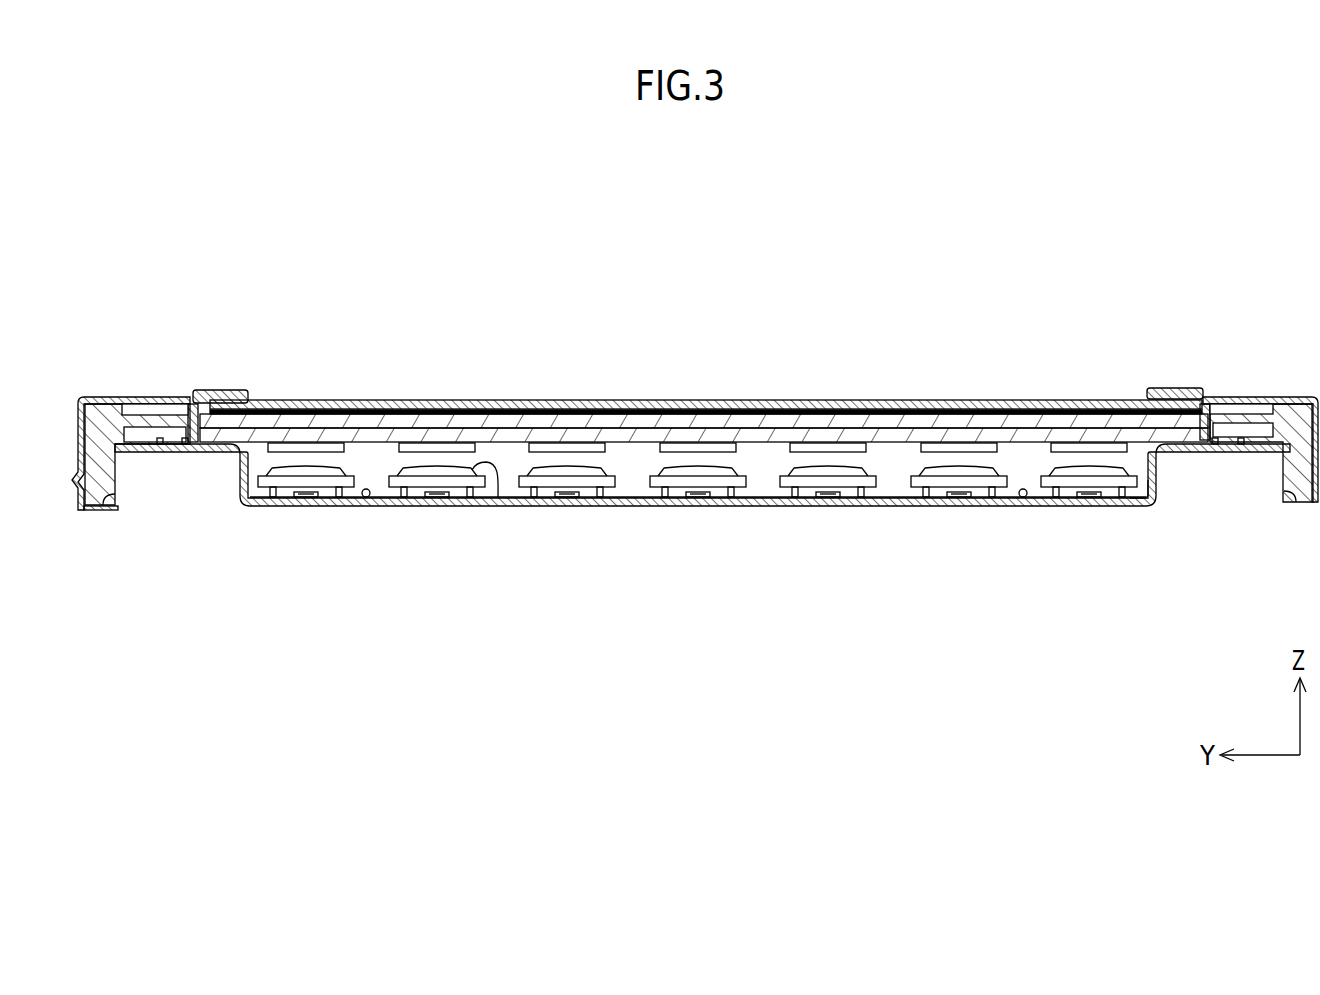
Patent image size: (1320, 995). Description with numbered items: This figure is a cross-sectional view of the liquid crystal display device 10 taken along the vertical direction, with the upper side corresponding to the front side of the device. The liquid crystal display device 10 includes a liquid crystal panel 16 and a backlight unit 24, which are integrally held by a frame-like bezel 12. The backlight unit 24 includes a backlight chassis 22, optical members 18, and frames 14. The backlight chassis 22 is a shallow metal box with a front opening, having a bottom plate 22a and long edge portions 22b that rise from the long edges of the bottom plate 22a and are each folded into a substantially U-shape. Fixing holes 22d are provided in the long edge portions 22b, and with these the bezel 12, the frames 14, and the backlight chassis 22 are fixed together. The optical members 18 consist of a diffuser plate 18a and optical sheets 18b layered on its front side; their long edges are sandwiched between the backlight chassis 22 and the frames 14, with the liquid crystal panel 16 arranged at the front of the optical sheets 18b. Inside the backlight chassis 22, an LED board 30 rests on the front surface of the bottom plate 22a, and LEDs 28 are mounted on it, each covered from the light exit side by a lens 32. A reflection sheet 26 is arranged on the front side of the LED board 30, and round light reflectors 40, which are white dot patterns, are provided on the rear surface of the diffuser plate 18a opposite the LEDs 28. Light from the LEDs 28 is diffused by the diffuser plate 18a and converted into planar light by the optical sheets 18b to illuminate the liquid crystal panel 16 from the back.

The liquid crystal display device 10 is at (642, 340).
The bezel 12 is at (1238, 402).
The frames 14 is at (98, 425).
The liquid crystal panel 16 is at (515, 405).
The optical members 18 is at (842, 362).
The diffuser plate 18a is at (735, 432).
The optical sheets 18b is at (810, 418).
The backlight chassis 22 is at (676, 507).
The bottom plate 22a is at (365, 498).
The long edge portions 22b is at (100, 500).
The fixing holes 22d is at (160, 450).
The backlight unit 24 is at (1157, 506).
The reflection sheet 26 is at (1025, 500).
The LEDs 28 is at (440, 500).
The LED board 30 is at (790, 500).
The lenses 32 is at (500, 497).
The light reflectors 40 is at (300, 443).